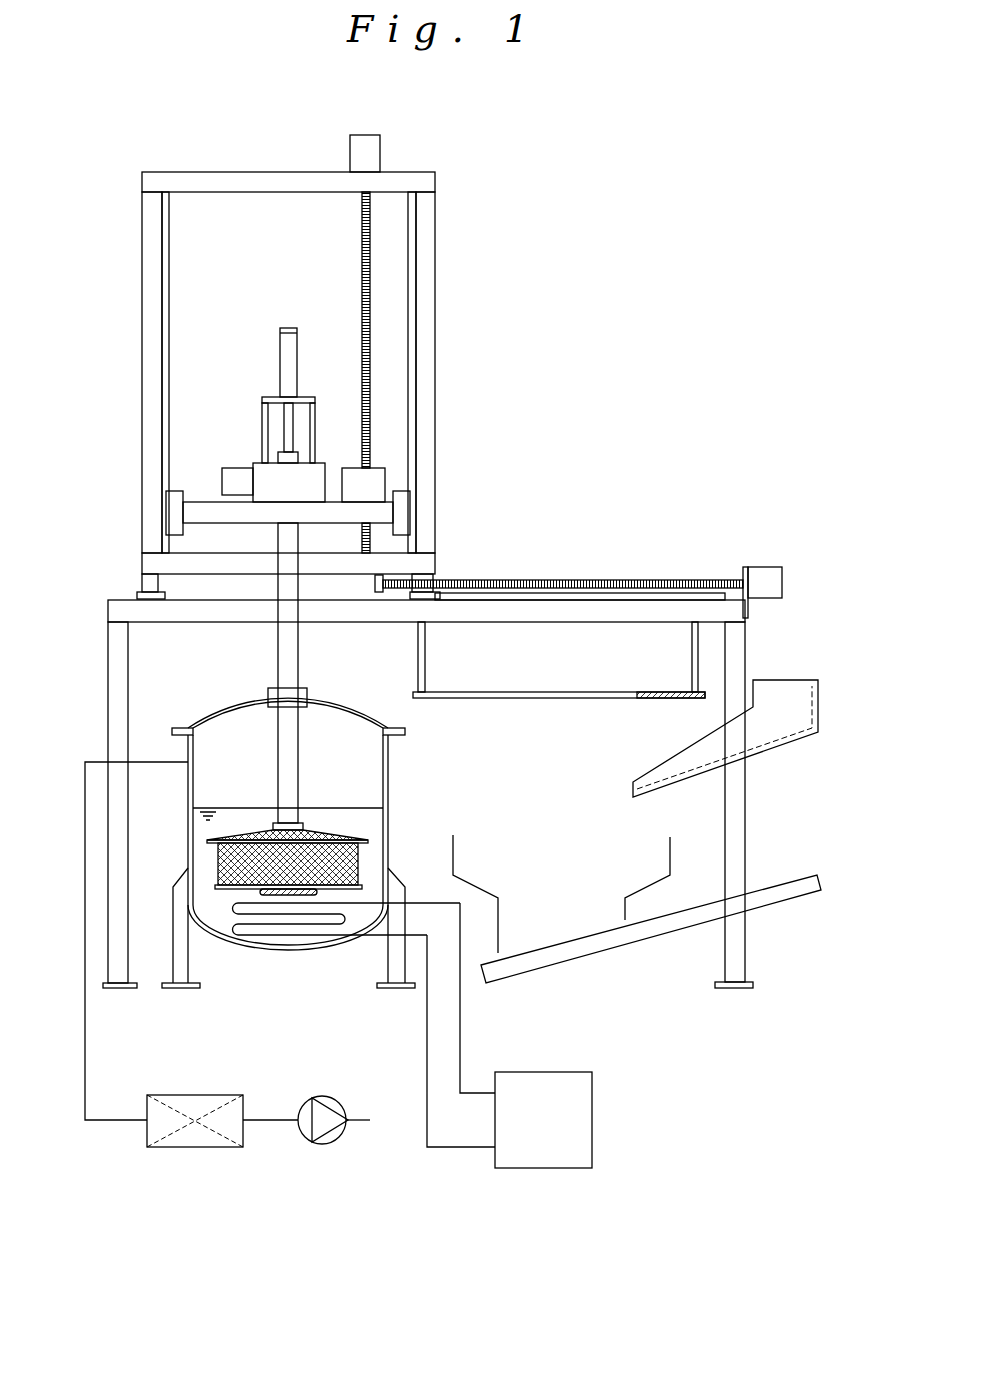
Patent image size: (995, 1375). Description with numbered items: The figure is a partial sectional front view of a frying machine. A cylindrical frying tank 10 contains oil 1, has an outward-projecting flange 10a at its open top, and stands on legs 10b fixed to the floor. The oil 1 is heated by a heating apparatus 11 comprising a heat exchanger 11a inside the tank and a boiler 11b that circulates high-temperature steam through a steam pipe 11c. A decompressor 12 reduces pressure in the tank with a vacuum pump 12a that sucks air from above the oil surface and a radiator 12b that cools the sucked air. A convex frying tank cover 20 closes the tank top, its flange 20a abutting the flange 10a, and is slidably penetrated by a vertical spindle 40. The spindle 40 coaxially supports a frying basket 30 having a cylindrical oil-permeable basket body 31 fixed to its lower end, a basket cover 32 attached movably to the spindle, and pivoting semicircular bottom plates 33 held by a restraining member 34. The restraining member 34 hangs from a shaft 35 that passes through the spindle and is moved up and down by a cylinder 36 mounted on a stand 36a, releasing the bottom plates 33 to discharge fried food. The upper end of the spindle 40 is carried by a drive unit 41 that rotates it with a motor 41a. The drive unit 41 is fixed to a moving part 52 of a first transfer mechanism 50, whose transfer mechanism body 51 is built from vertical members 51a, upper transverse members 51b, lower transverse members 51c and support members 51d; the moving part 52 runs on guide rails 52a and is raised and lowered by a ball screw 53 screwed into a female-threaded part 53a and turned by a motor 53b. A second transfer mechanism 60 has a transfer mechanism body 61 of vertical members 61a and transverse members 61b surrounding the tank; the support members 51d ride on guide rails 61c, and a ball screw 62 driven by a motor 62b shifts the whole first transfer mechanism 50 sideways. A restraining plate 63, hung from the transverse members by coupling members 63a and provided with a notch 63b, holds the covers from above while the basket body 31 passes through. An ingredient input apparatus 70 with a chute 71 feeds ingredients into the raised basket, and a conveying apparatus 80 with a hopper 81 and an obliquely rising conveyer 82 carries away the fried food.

The oil 1 is at (239, 815).
The frying tank 10 is at (320, 950).
The flange 10a is at (184, 742).
The legs 10b is at (181, 990).
The heating apparatus 11 is at (455, 1162).
The heat exchanger 11a is at (249, 922).
The boiler 11b is at (545, 1170).
The steam pipe 11c is at (425, 1084).
The decompressor 12 is at (255, 1152).
The vacuum pump 12a is at (328, 1146).
The radiator 12b is at (196, 1148).
The frying tank cover 20 is at (225, 705).
The flange 20a is at (178, 725).
The frying basket 30 is at (362, 862).
The basket body 31 is at (216, 862).
The basket cover 32 is at (327, 835).
The bottom plates 33 is at (226, 890).
The restraining member 34 is at (288, 897).
The shaft 35 is at (294, 428).
The cylinder 36 is at (288, 326).
The stand 36a is at (270, 397).
The spindle 40 is at (300, 660).
The drive unit 41 is at (310, 480).
The motor 41a is at (236, 468).
The first transfer mechanism 50 is at (287, 155).
The transfer mechanism body 51 is at (146, 170).
The vertical members 51a is at (142, 360).
The upper transverse members 51b is at (228, 182).
The lower transverse members 51c is at (142, 563).
The support members 51d is at (146, 583).
The moving part 52 is at (202, 510).
The guide rails 52a is at (167, 292).
The ball screw 53 is at (360, 228).
The female-threaded part 53a is at (375, 480).
The motor 53b is at (368, 133).
The second transfer mechanism 60 is at (605, 548).
The transfer mechanism body 61 is at (108, 672).
The vertical members 61a is at (118, 990).
The transverse members 61b is at (705, 597).
The guide rails 61c is at (541, 600).
The ball screw 62 is at (655, 580).
The motor 62b is at (765, 566).
The restraining plate 63 is at (559, 726).
The coupling members 63a is at (426, 655).
The notch 63b is at (510, 700).
The ingredient input apparatus 70 is at (800, 755).
The chute 71 is at (765, 750).
The conveying apparatus 80 is at (575, 968).
The hopper 81 is at (672, 865).
The conveyer 82 is at (655, 922).